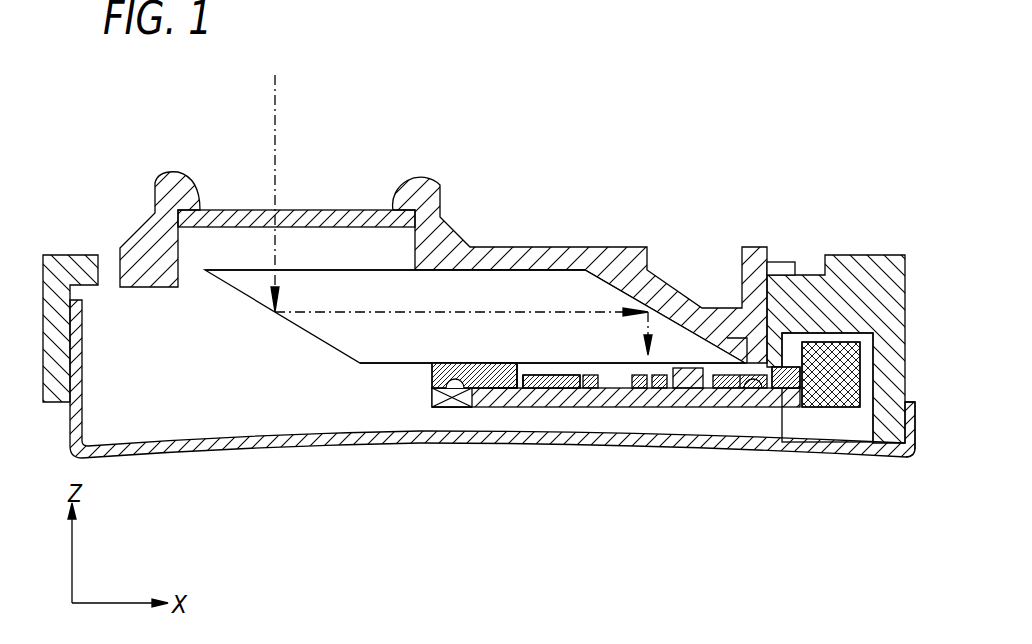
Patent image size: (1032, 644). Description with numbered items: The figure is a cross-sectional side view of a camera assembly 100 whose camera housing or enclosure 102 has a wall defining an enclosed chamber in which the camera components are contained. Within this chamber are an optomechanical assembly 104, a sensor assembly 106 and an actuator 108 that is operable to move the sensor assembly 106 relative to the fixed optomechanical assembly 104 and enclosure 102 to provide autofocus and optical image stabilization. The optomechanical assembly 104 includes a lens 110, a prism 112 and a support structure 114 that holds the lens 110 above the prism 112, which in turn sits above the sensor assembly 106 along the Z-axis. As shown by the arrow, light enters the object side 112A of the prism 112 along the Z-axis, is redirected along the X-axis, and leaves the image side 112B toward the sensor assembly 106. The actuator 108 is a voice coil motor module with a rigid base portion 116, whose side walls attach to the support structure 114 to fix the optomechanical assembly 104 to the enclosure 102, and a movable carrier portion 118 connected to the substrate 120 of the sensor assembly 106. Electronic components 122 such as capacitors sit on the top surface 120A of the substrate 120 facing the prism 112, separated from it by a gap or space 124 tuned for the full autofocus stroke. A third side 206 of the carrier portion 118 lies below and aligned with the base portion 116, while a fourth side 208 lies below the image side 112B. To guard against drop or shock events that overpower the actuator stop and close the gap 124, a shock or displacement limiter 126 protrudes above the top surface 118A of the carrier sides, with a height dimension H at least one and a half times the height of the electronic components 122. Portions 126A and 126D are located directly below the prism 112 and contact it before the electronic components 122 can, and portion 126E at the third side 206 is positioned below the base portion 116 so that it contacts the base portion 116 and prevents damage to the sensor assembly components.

The camera assembly 100 is at (763, 139).
The camera housing or enclosure 102 is at (160, 457).
The optomechanical assembly 104 is at (262, 316).
The sensor assembly 106 is at (424, 394).
The actuator 108 is at (870, 393).
The lens 110 is at (240, 209).
The prism 112 is at (280, 318).
The object side of prism 112A is at (318, 268).
The image side of prism 112B is at (383, 364).
The support structure 114 is at (628, 246).
The base portion 116 is at (62, 254).
The carrier portion 118 is at (832, 408).
The top surface of carrier portion 118A is at (460, 392).
The substrate 120 is at (720, 389).
The top surface of substrate 120A is at (767, 390).
The electronic components 122 is at (582, 376).
The gap or space 124 is at (616, 394).
The shock or displacement limiter 126 is at (486, 362).
The portion of limiter 126A is at (686, 389).
The portion of limiter 126D is at (497, 386).
The portion of limiter 126E is at (787, 390).
The third side of carrier portion 206 is at (832, 356).
The fourth side of carrier portion 208 is at (431, 406).
The height dimension H is at (523, 376).